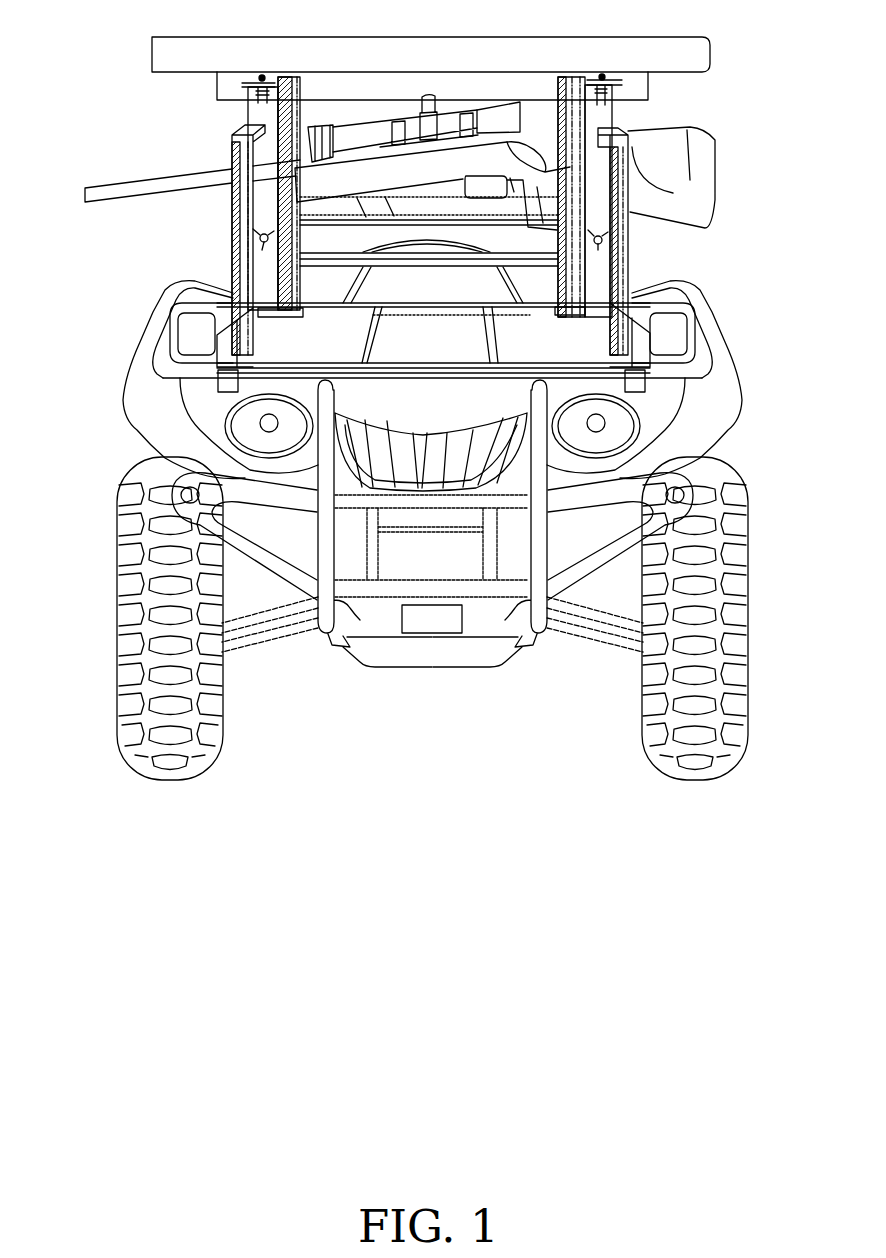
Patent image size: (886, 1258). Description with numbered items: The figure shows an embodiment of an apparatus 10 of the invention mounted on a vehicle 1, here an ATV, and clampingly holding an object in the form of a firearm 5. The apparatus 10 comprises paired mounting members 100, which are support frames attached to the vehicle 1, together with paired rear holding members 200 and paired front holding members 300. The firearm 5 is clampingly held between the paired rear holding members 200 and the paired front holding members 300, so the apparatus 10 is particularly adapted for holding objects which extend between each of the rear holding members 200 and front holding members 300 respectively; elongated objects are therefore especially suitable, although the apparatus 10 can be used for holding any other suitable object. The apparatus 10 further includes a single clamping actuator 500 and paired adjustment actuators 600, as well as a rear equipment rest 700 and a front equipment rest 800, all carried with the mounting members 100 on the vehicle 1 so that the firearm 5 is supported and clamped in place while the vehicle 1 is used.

The vehicle 1 is at (96, 689).
The firearm 5 is at (729, 144).
The apparatus 10 is at (164, 111).
The mounting members 100 is at (209, 263).
The rear holding members 200 is at (304, 158).
The front holding members 300 is at (232, 111).
The clamping actuator 500 is at (660, 305).
The adjustment actuators 600 is at (252, 246).
The rear equipment rest 700 is at (697, 57).
The front equipment rest 800 is at (220, 92).